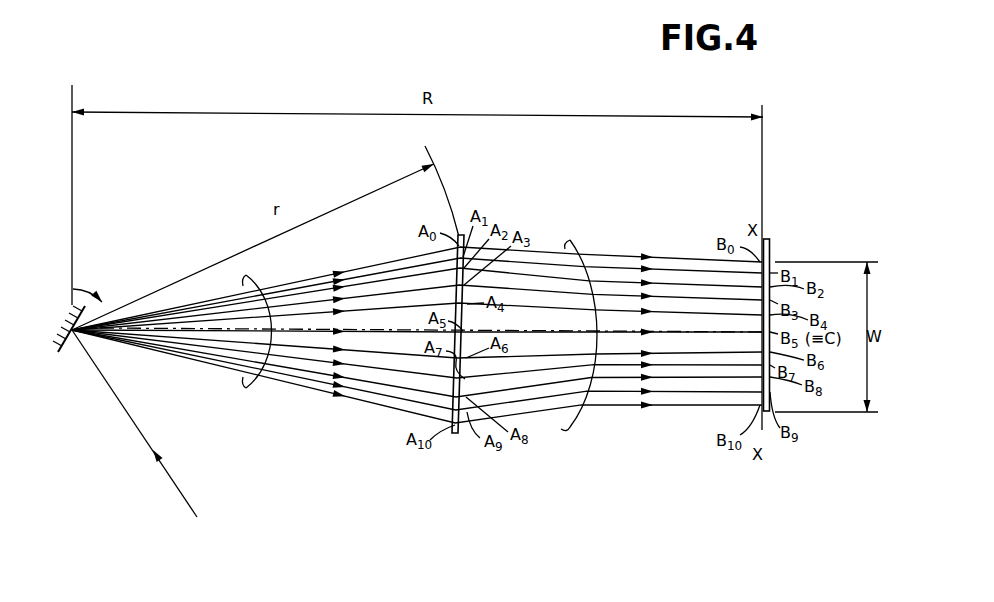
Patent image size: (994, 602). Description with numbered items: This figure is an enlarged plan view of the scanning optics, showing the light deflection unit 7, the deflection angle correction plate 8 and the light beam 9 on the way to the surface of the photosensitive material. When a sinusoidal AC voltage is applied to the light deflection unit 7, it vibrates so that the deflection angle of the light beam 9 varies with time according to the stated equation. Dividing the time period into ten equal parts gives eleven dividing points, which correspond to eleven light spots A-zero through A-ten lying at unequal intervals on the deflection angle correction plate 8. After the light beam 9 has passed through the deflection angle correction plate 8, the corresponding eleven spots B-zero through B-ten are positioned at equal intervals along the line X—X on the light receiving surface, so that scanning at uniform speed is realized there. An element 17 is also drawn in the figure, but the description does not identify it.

The light deflection unit 7 is at (62, 320).
The deflection angle correction plate 8 is at (462, 231).
The light beam 9 is at (575, 243).
The lens 17 is at (255, 277).